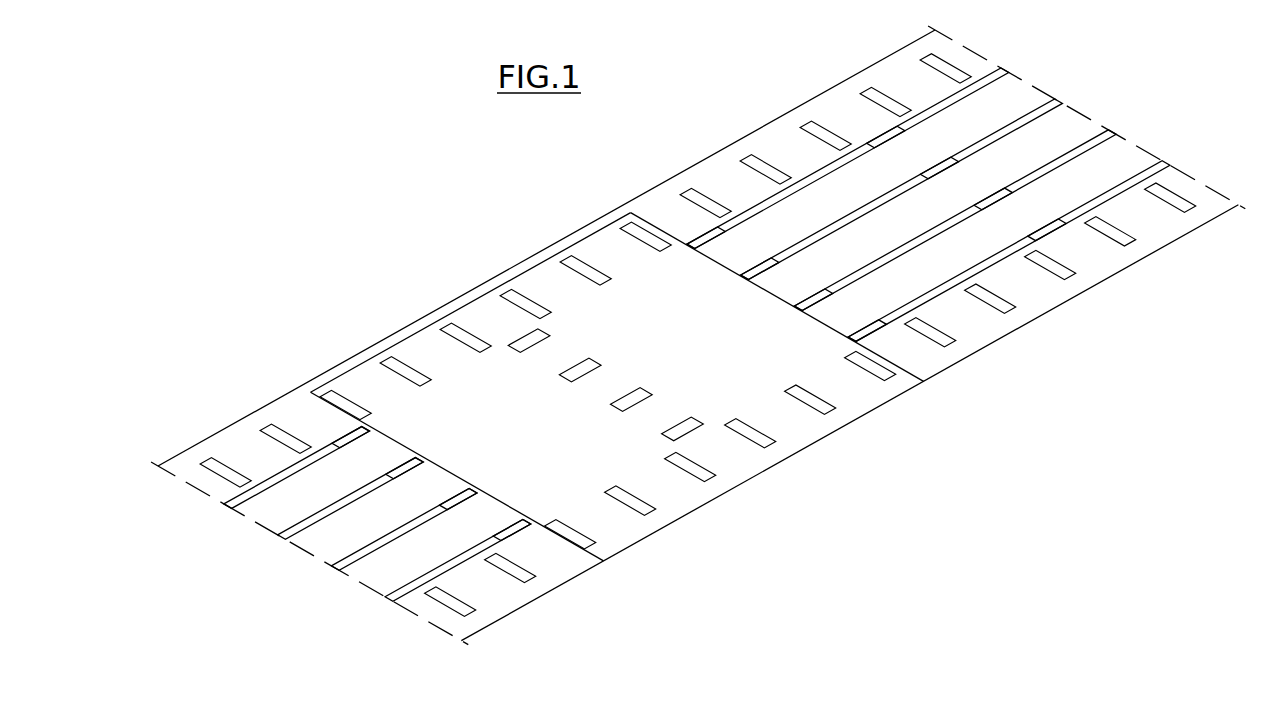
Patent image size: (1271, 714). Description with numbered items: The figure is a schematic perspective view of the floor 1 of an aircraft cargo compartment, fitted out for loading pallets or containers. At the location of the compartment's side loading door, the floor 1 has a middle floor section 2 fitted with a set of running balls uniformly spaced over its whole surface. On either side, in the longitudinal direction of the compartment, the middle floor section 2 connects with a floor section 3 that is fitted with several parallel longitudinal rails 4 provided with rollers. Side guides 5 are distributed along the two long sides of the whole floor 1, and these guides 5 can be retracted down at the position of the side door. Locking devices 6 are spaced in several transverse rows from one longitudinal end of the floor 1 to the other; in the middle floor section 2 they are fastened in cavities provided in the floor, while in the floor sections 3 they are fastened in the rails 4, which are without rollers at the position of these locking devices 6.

The floor 1 is at (480, 263).
The middle floor section 2 is at (437, 357).
The floor section 3 is at (731, 174).
The longitudinal rails 4 is at (1045, 113).
The side guides 5 is at (868, 94).
The locking devices 6 is at (903, 133).